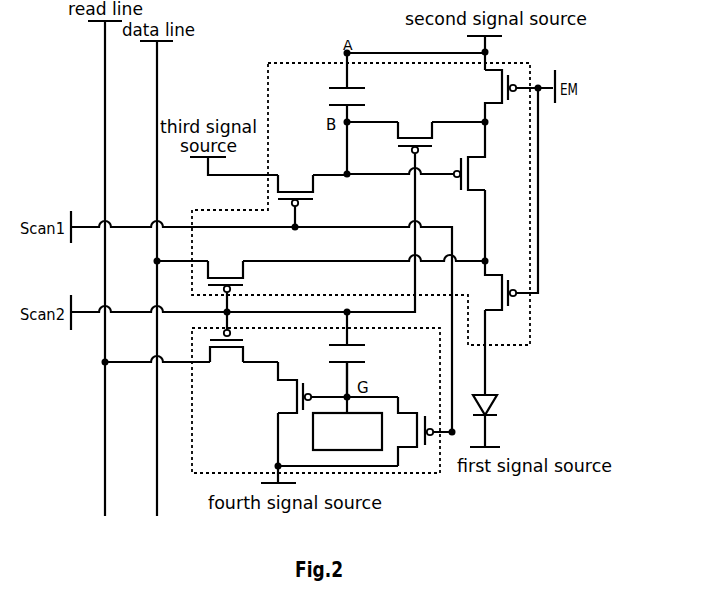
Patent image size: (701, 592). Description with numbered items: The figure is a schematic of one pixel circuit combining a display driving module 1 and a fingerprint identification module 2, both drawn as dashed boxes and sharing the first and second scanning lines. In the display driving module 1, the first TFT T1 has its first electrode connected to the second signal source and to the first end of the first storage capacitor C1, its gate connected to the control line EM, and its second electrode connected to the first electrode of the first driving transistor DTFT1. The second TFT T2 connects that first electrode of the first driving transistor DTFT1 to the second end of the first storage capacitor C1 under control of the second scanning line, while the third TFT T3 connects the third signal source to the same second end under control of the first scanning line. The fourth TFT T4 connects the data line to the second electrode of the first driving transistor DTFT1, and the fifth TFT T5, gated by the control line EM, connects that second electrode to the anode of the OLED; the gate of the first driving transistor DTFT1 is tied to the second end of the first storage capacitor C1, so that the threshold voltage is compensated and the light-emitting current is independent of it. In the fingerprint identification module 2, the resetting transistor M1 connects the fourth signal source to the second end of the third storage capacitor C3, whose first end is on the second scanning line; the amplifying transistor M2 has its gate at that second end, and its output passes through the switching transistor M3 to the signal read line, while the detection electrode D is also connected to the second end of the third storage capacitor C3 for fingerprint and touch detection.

The display driving module 1 is at (280, 64).
The fingerprint identification module 2 is at (192, 416).
The first TFT T1 is at (495, 96).
The second TFT T2 is at (415, 132).
The third TFT T3 is at (295, 197).
The fourth TFT T4 is at (225, 283).
The fifth TFT T5 is at (496, 285).
The first driving transistor DTFT1 is at (488, 156).
The resetting transistor M1 is at (421, 431).
The amplifying transistor M2 is at (308, 387).
The switching transistor M3 is at (226, 344).
The first storage capacitor C1 is at (335, 98).
The third storage capacitor C3 is at (359, 354).
The element OLED is at (509, 406).
The detection electrode D is at (347, 431).